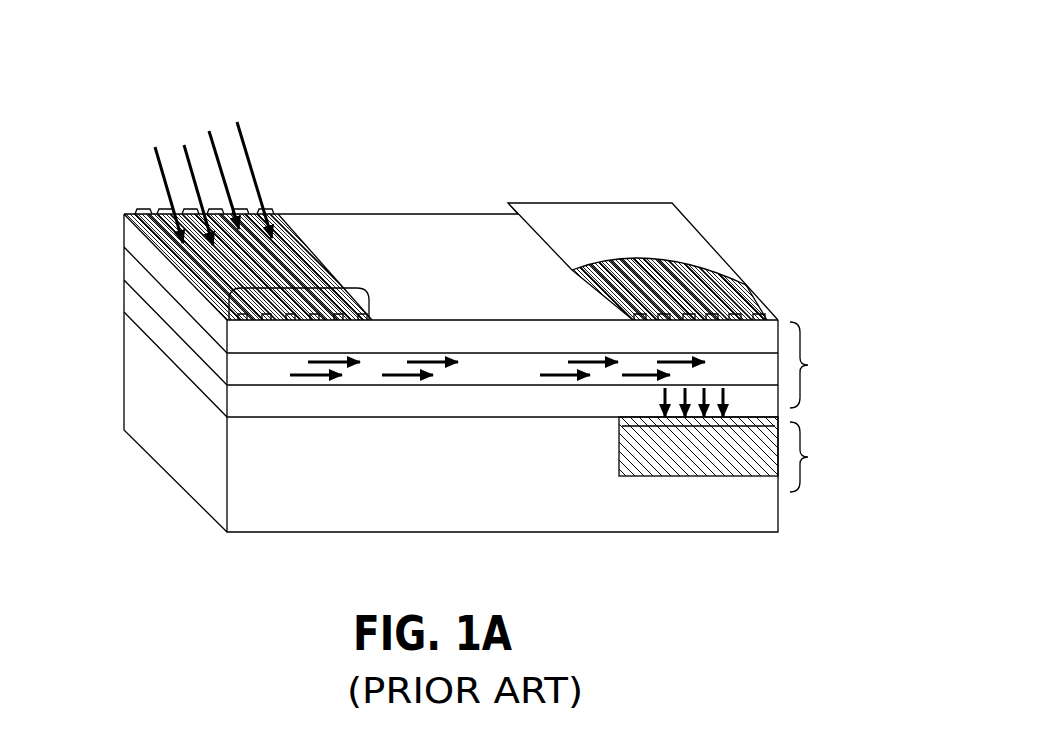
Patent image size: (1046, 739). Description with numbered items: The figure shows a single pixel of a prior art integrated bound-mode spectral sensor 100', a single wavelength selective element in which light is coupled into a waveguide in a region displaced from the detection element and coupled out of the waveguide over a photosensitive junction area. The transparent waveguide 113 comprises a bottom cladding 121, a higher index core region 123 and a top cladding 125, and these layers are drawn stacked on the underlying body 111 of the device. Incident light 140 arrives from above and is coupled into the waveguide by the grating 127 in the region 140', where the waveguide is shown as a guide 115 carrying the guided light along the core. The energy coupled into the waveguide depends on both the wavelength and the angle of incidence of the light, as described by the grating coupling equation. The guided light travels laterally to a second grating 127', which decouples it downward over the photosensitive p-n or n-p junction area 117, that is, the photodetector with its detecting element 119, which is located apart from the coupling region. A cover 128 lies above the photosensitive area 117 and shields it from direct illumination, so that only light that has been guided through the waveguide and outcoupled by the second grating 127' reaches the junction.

The bound-mode spectral sensor 100' is at (709, 39).
The substrate 111 is at (157, 420).
The transparent waveguide 113 is at (819, 365).
The waveguide 115 is at (295, 286).
The photosensitive p-n junction area 117 is at (819, 457).
The photodetector 119 is at (622, 433).
The bottom cladding 121 is at (130, 305).
The core region 123 is at (130, 270).
The top cladding 125 is at (130, 236).
The grating 127 is at (245, 227).
The second grating 127' is at (703, 249).
The cover 128 is at (592, 225).
The incident light 140 is at (207, 164).
The coupling region 140' is at (481, 427).